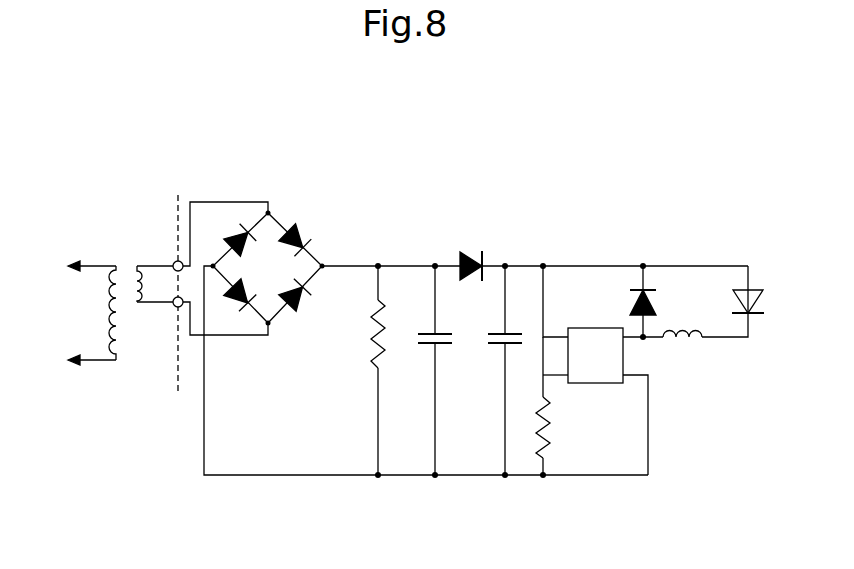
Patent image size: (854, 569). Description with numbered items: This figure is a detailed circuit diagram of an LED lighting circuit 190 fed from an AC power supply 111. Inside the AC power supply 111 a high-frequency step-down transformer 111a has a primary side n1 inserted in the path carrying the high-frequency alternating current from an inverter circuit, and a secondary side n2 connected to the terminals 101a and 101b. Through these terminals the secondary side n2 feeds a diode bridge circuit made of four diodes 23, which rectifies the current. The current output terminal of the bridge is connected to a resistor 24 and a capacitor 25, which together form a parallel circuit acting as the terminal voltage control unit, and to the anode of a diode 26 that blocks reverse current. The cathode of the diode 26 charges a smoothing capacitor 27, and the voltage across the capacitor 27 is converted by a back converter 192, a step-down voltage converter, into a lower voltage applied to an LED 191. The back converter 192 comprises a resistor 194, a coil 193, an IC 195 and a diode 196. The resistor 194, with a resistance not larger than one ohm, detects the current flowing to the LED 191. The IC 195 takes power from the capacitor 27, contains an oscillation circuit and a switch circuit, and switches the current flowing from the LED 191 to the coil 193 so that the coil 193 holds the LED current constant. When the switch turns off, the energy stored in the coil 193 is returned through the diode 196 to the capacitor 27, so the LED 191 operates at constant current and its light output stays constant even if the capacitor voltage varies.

The AC power supply 111 is at (167, 190).
The high-frequency step-down transformer 111a is at (92, 364).
The primary side n1 is at (90, 313).
The secondary side n2 is at (147, 300).
The terminal 101a is at (175, 261).
The terminal 101b is at (176, 308).
The LED lighting circuit 190 is at (723, 192).
The diode 23 is at (308, 226).
The resistor 24 is at (372, 333).
The capacitor 25 is at (428, 333).
The diode 26 is at (477, 252).
The smoothing capacitor 27 is at (492, 353).
The back converter 192 is at (740, 490).
The IC 195 is at (596, 328).
The resistor 194 is at (553, 432).
The diode 196 is at (657, 302).
The coil 193 is at (683, 347).
The LED 191 is at (752, 286).